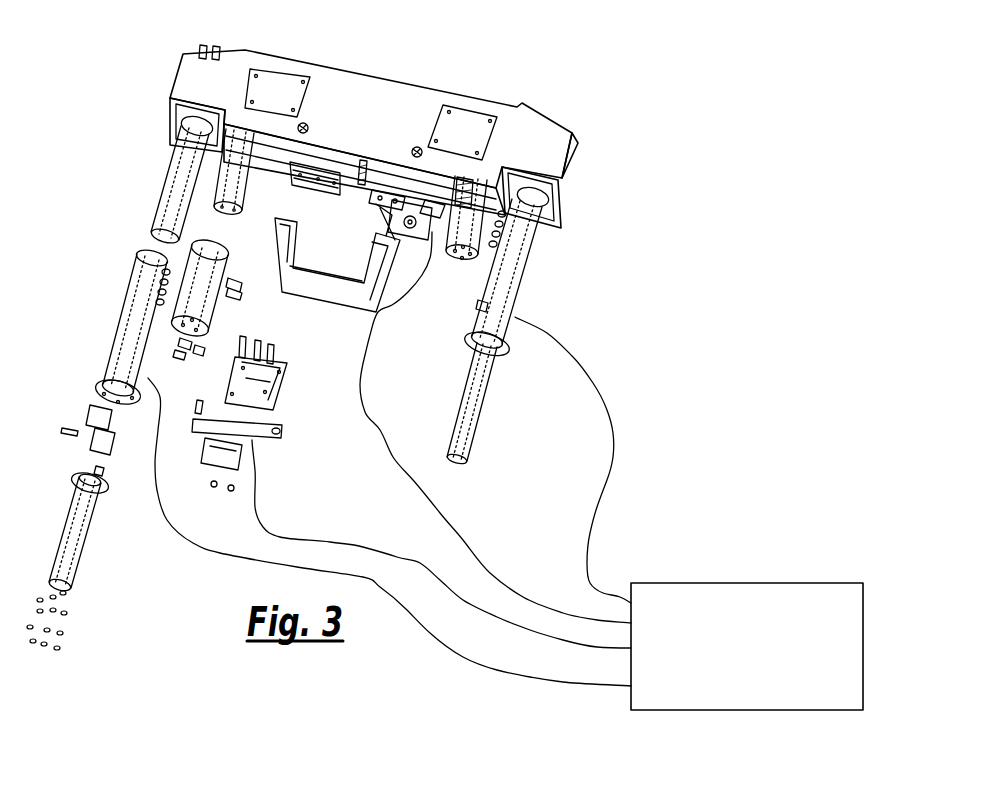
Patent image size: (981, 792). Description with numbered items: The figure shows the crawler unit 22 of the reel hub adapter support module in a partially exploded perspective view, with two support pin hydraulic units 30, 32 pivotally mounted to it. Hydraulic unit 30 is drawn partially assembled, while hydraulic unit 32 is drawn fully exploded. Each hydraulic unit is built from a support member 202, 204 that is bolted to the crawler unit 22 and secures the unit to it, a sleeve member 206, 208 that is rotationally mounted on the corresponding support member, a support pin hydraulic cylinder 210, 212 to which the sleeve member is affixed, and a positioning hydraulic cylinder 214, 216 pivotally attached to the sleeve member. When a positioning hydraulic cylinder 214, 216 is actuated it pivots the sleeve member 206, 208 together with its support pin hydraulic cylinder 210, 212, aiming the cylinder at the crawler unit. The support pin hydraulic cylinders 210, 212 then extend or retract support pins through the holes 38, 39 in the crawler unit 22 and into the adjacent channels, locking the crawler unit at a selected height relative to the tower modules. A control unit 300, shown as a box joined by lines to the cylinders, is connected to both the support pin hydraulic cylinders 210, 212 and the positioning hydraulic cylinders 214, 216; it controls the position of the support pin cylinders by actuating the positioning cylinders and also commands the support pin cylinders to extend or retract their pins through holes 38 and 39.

The crawler unit 22 is at (383, 98).
The hole 39 is at (185, 123).
The support member 204 is at (223, 188).
The sleeve member 208 is at (175, 263).
The support pin hydraulic unit 32 is at (165, 288).
The support pin hydraulic cylinder 212 is at (118, 353).
The positioning hydraulic cylinder 214 is at (398, 208).
The support member 202 is at (458, 272).
The hole 38 is at (537, 200).
The support pin hydraulic unit 30 is at (508, 230).
The sleeve member 206 is at (478, 240).
The support pin hydraulic cylinder 210 is at (503, 325).
The positioning hydraulic cylinder 216 is at (250, 440).
The control unit 300 is at (852, 583).